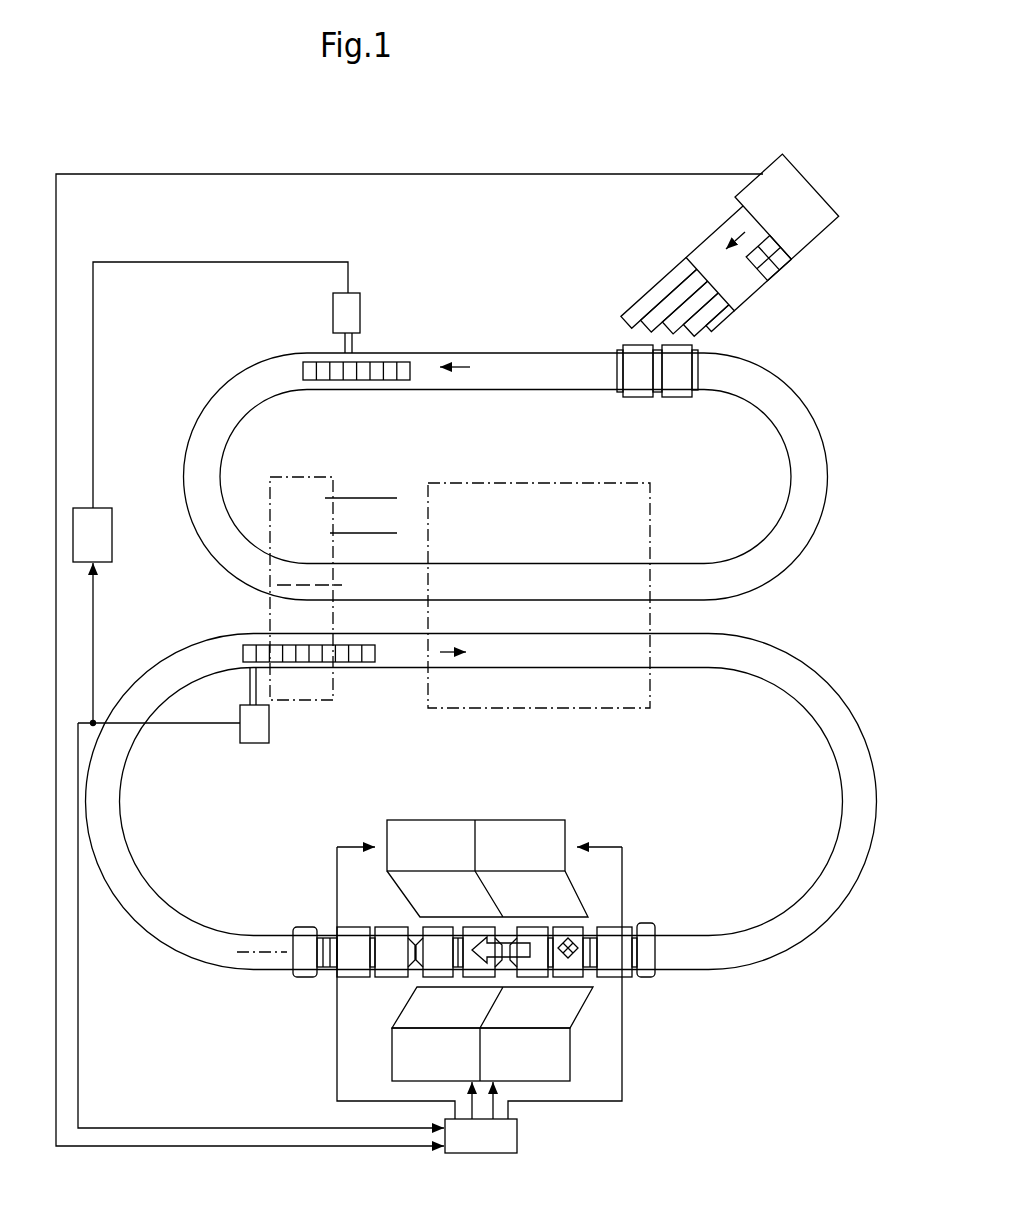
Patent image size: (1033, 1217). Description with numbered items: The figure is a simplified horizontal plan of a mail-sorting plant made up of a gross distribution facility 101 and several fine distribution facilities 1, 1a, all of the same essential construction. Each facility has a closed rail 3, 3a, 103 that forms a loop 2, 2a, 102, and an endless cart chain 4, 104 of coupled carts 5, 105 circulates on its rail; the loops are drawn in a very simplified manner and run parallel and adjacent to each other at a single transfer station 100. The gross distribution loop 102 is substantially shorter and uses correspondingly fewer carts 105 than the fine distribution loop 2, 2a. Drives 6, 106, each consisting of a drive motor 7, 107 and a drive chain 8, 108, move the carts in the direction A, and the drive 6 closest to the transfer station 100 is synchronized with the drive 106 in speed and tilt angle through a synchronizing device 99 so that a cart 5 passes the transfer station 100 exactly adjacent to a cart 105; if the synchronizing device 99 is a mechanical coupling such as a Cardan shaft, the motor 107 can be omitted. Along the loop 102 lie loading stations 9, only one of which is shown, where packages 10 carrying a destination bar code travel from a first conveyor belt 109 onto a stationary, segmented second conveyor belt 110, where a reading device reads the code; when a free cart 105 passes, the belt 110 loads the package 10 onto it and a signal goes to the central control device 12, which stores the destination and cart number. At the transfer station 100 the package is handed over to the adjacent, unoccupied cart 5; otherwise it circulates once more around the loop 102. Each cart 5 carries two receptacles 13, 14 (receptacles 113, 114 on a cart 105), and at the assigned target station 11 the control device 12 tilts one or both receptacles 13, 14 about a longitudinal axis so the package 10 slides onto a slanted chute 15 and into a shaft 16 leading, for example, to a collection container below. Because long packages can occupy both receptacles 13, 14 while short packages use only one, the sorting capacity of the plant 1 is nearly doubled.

The fine distribution facility 1 is at (775, 1040).
The fine distribution facility 1a is at (333, 460).
The loop 2 is at (847, 903).
The loop 2a is at (358, 485).
The rail 3 is at (820, 720).
The rail 3a is at (375, 533).
The cart chain 4 is at (268, 952).
The cart 5 is at (370, 923).
The drive 6 is at (307, 705).
The drive motor 7 is at (258, 731).
The drive chain 8 is at (297, 653).
The loading station 9 is at (723, 245).
The package 10 is at (783, 263).
The target station 11 is at (479, 944).
The central control device 12 is at (517, 1130).
The receptacle 13 is at (357, 962).
The receptacle 14 is at (390, 963).
The slanted chute 15 is at (553, 890).
The shaft 16 is at (553, 833).
The synchronizing device 99 is at (100, 525).
The transfer station 100 is at (272, 479).
The gross distribution facility 101 is at (820, 395).
The loop 102 is at (828, 430).
The rail 103 is at (785, 508).
The cart chain 104 is at (323, 585).
The cart 105 is at (656, 414).
The drive 106 is at (352, 305).
The drive motor 107 is at (333, 308).
The drive chain 108 is at (392, 363).
The first conveyor belt 109 is at (702, 258).
The second conveyor belt 110 is at (658, 295).
The receptacle 113 is at (642, 377).
The receptacle 114 is at (677, 382).